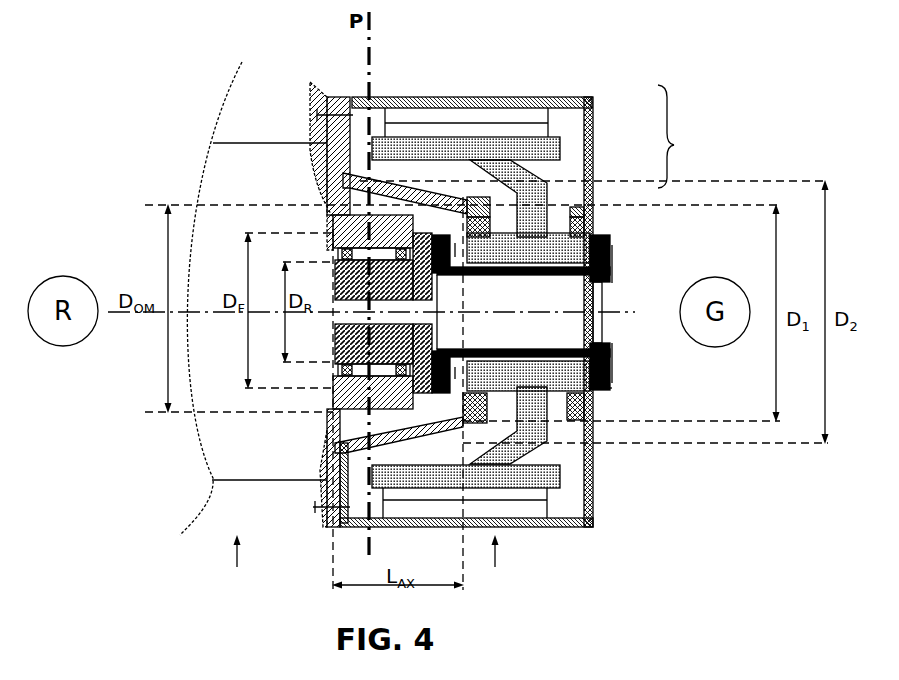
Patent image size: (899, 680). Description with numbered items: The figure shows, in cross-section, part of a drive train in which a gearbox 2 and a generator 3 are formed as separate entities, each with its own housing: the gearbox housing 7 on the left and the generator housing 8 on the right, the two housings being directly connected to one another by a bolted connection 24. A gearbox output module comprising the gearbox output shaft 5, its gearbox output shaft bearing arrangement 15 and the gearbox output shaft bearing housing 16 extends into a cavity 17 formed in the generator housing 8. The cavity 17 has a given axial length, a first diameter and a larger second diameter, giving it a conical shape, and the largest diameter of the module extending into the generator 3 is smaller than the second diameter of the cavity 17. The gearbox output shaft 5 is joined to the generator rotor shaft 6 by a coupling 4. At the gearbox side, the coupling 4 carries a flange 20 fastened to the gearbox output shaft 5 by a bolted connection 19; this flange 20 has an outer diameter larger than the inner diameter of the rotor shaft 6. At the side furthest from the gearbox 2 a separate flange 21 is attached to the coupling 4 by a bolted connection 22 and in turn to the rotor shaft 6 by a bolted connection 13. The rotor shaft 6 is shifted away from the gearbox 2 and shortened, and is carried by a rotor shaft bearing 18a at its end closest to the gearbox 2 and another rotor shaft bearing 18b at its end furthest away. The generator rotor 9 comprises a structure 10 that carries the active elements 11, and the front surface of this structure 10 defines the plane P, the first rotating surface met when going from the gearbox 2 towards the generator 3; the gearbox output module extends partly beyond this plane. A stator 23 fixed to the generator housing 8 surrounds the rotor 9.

The gearbox 2 is at (236, 572).
The generator 3 is at (495, 572).
The coupling 4 is at (548, 250).
The gearbox output shaft 5 is at (397, 257).
The rotor shaft 6 is at (573, 248).
The gearbox housing 7 is at (322, 145).
The generator housing 8 is at (589, 99).
The generator rotor 9 is at (672, 136).
The structure 10 is at (530, 187).
The active elements 11 is at (537, 127).
The bolted connection 13 is at (610, 353).
The gearbox output shaft bearing arrangement 15 is at (358, 258).
The gearbox output shaft bearing housing 16 is at (353, 217).
The cavity 17 is at (435, 413).
The rotor shaft bearing 18a is at (480, 393).
The rotor shaft bearing 18b is at (572, 393).
The bolted connection 19 is at (472, 405).
The flange 20 is at (440, 233).
The flange 21 is at (606, 387).
The bolted connection 22 is at (610, 252).
The stator 23 is at (513, 113).
The bolted connection 24 is at (330, 487).